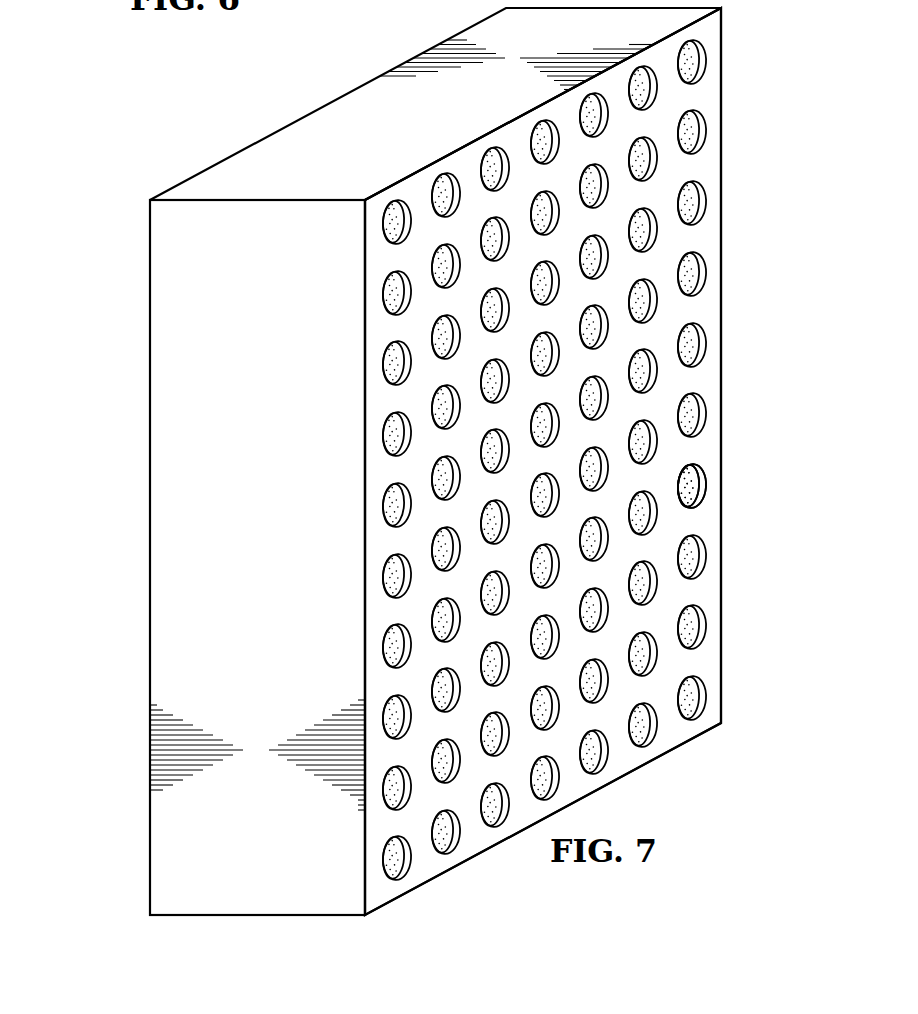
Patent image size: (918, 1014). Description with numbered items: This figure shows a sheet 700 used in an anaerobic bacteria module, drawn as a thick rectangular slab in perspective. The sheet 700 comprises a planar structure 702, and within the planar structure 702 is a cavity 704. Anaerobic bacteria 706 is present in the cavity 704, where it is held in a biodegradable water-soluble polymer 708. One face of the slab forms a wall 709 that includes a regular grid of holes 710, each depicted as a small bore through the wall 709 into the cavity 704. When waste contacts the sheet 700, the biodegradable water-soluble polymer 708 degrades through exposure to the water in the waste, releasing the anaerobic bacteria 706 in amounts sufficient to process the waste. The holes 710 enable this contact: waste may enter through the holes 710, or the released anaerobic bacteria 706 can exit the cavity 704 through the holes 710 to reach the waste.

The sheet 700 is at (112, 260).
The planar structure 702 is at (192, 185).
The cavity 704 is at (704, 415).
The anaerobic bacteria 706 is at (700, 504).
The biodegradable water-soluble polymer 708 is at (700, 477).
The wall 709 is at (713, 33).
The holes 710 is at (704, 208).